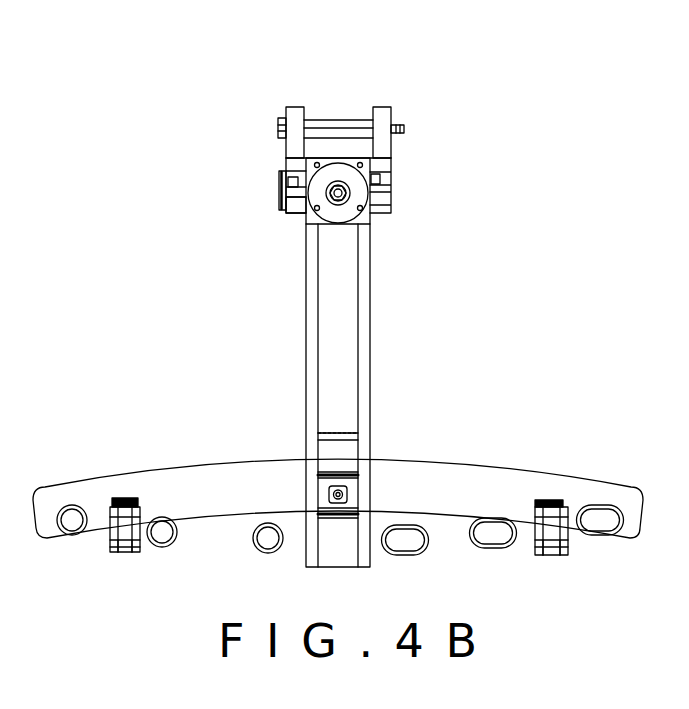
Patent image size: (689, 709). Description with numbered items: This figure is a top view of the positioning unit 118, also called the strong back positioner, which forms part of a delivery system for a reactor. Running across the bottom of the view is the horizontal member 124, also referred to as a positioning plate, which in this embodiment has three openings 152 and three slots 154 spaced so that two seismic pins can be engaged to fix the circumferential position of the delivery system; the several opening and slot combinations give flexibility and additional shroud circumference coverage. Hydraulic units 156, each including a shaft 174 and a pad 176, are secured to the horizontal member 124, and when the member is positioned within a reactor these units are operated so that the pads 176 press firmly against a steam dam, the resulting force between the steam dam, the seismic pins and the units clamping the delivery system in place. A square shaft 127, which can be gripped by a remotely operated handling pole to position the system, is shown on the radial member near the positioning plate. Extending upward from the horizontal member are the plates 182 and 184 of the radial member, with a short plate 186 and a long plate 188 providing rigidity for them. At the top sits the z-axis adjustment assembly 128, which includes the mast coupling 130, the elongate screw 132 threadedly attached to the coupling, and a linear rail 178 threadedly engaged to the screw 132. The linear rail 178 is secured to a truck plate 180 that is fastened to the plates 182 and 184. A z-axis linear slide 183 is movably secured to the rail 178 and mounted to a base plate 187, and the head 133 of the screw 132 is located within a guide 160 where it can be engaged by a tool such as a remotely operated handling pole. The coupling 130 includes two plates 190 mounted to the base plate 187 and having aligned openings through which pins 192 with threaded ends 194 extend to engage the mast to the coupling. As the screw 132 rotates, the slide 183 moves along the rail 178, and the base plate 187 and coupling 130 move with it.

The positioning unit 118 is at (373, 355).
The horizontal member 124 is at (238, 553).
The square shaft 127 is at (325, 494).
The z-axis adjustment assembly 128 is at (405, 187).
The mast coupling 130 is at (276, 128).
The elongate screw 132 is at (349, 186).
The head 133 is at (335, 187).
The openings 152 is at (262, 530).
The slots 154 is at (603, 523).
The hydraulic units 156 is at (123, 547).
The guide 160 is at (360, 212).
The shafts 174 is at (118, 553).
The pads 176 is at (118, 502).
The linear rail 178 is at (390, 190).
The truck plate 180 is at (298, 216).
The plate 182 is at (315, 312).
The z-axis linear slide 183 is at (300, 187).
The plate 184 is at (363, 300).
The short plate 186 is at (348, 457).
The base plate 187 is at (297, 167).
The long plate 188 is at (338, 552).
The plates 190 is at (297, 118).
The pins 192 is at (348, 120).
The threaded ends 194 is at (403, 128).